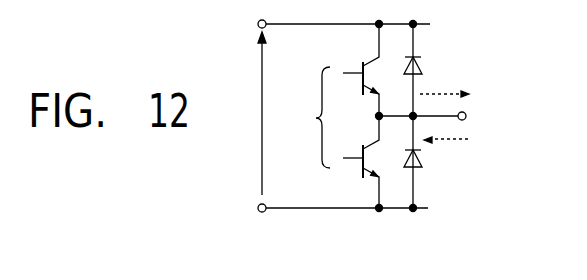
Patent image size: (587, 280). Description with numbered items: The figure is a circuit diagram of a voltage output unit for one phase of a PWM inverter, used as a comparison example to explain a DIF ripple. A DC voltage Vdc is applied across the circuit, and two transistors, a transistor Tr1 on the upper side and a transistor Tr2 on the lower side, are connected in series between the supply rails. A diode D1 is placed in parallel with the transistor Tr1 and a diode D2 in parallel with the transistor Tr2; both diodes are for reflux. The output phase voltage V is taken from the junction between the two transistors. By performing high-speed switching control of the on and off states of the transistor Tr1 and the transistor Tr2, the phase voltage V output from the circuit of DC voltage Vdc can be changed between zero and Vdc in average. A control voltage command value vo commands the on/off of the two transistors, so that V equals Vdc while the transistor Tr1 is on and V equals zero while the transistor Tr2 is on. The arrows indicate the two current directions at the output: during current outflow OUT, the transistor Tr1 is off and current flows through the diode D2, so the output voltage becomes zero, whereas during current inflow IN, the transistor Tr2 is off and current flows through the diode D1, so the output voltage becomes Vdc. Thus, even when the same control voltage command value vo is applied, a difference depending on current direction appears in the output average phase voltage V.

The DC voltage Vdc is at (243, 113).
The transistor Tr1 is at (353, 70).
The transistor Tr2 is at (352, 162).
The diode D1 is at (421, 70).
The diode D2 is at (422, 162).
The phase voltage V is at (434, 118).
The current outflow OUT is at (456, 81).
The current inflow IN is at (451, 149).
The control voltage command value vo is at (307, 117).